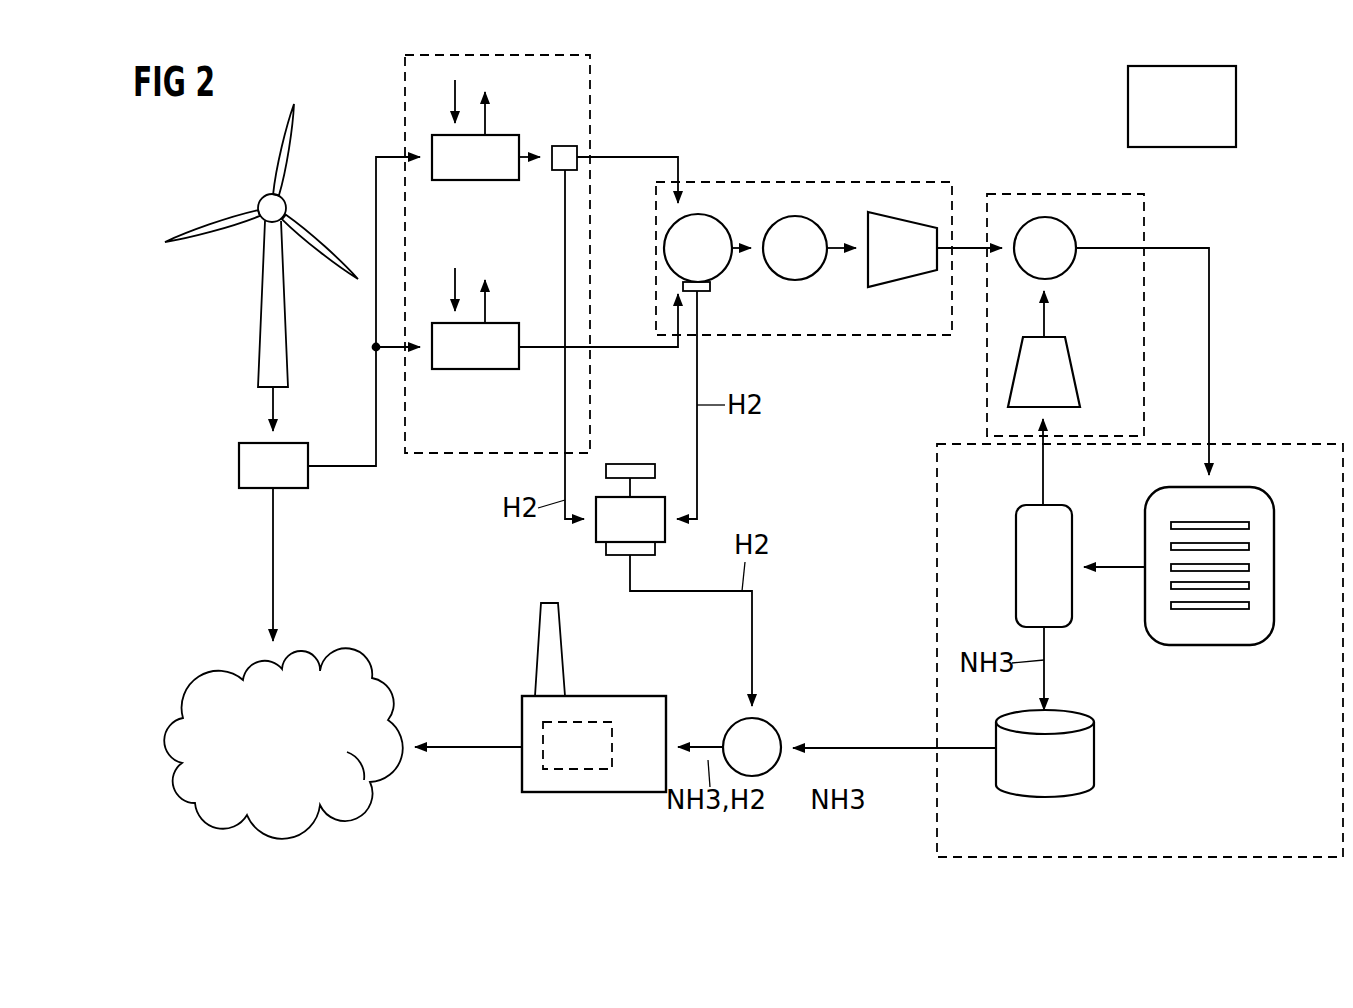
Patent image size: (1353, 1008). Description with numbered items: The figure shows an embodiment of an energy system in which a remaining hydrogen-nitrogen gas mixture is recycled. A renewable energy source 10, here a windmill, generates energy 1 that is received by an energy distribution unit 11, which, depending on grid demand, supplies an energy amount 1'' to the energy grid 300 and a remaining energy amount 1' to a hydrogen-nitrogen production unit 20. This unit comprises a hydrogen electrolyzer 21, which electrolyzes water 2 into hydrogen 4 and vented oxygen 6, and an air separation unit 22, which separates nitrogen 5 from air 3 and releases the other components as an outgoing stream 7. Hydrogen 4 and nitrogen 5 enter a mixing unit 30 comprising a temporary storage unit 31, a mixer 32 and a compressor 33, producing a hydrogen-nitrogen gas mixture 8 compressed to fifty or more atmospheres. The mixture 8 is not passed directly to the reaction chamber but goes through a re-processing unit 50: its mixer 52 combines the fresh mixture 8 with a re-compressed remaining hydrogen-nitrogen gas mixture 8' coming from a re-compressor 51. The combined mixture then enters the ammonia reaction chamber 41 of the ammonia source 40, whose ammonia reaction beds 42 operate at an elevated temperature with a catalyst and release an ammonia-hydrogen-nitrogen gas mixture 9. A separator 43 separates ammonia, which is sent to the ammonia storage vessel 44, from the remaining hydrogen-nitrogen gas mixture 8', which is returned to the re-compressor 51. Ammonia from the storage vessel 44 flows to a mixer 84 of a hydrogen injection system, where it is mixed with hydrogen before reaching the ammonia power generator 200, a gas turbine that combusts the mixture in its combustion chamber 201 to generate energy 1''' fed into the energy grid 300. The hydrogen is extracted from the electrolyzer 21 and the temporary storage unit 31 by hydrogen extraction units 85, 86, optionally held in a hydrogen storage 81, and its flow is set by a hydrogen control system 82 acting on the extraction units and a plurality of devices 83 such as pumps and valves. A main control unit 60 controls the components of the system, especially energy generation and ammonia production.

The energy 1 is at (296, 409).
The remaining energy amount 1' is at (364, 336).
The energy amount 1'' is at (301, 564).
The energy 1''' is at (468, 773).
The water 2 is at (455, 96).
The air 3 is at (455, 285).
The Hydrogen 4 is at (633, 157).
The Nitrogen 5 is at (630, 347).
The Oxygen 6 is at (485, 112).
The residual gas 7 is at (485, 300).
The Hydrogen-Nitrogen-gas mixture 8 is at (1042, 333).
The remaining H2-N2-gas mixture 8' is at (1018, 398).
The NH3-H2-N2-gas mixture 9 is at (1115, 567).
The renewable energy source 10 is at (286, 307).
The energy distribution unit 11 is at (239, 477).
The Hydrogen-Nitrogen-production unit 20 is at (447, 453).
The Hydrogen electrolyzer 21 is at (482, 180).
The air separation unit 22 is at (478, 369).
The mixing unit 30 is at (862, 335).
The temporary storage unit 31 is at (722, 222).
The mixer 32 is at (815, 275).
The compressor 33 is at (910, 287).
The NH3 source 40 is at (937, 548).
The NH3 reaction chamber 41 is at (1210, 645).
The NH3 reaction beds 42 is at (1249, 526).
The separator 43 is at (1072, 607).
The NH3 storage vessel 44 is at (1094, 758).
The re-processing unit 50 is at (1144, 295).
The re-compressor 51 is at (1078, 372).
The mixer 52 is at (1071, 268).
The main control unit 60 is at (1236, 105).
The Hydrogen storage 81 is at (665, 535).
The Hydrogen control system 82 is at (637, 464).
The plurality of devices 83 is at (600, 552).
The mixer 84 is at (733, 725).
The Hydrogen extraction unit 85 is at (565, 146).
The Hydrogen extraction unit 86 is at (710, 288).
The NH3 power generator 200 is at (637, 792).
The combustion chamber 201 is at (565, 769).
The energy grid 300 is at (213, 668).